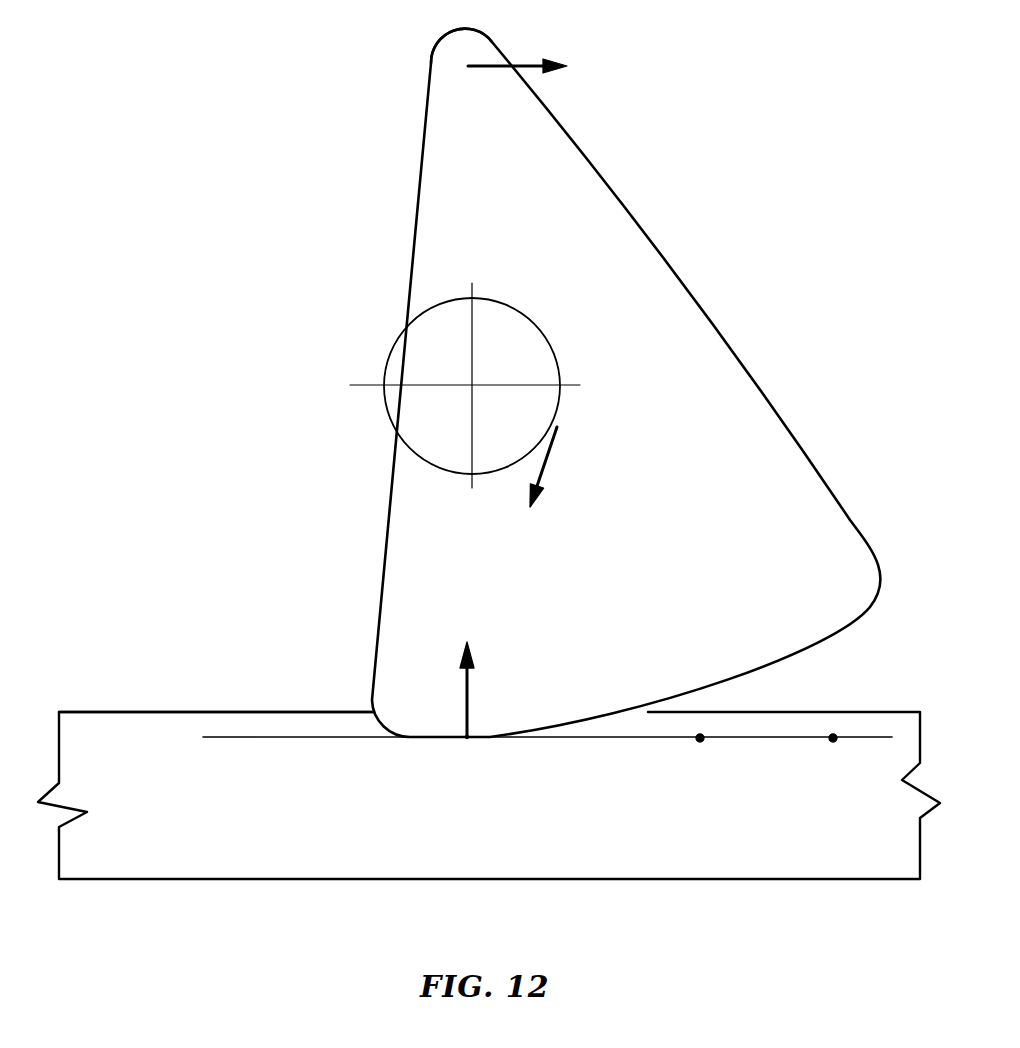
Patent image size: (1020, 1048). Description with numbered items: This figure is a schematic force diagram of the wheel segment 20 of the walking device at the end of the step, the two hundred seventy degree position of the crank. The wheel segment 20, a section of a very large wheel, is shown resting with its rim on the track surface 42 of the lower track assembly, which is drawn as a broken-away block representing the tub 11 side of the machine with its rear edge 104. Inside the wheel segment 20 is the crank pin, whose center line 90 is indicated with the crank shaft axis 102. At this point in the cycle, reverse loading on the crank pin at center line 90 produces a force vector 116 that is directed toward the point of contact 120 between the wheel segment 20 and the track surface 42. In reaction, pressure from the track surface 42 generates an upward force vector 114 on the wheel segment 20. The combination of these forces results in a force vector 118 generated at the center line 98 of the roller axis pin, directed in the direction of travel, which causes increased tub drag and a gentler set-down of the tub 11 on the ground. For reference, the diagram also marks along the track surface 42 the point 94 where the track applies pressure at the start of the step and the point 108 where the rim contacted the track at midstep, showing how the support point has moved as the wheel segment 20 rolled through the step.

The tub 11 is at (193, 710).
The wheel segment 20 is at (388, 492).
The track surface 42 is at (315, 738).
The center line of crank pin 90 is at (561, 387).
The point 94 is at (832, 745).
The center line of roller axis pin 98 is at (468, 68).
The crank shaft axis 102 is at (476, 384).
The rear edge of the tub 104 is at (59, 765).
The point of contact at midstep 108 is at (698, 744).
The force vector 114 is at (470, 683).
The force vector 116 is at (548, 456).
The force vector 118 is at (528, 62).
The point of contact 120 is at (466, 745).